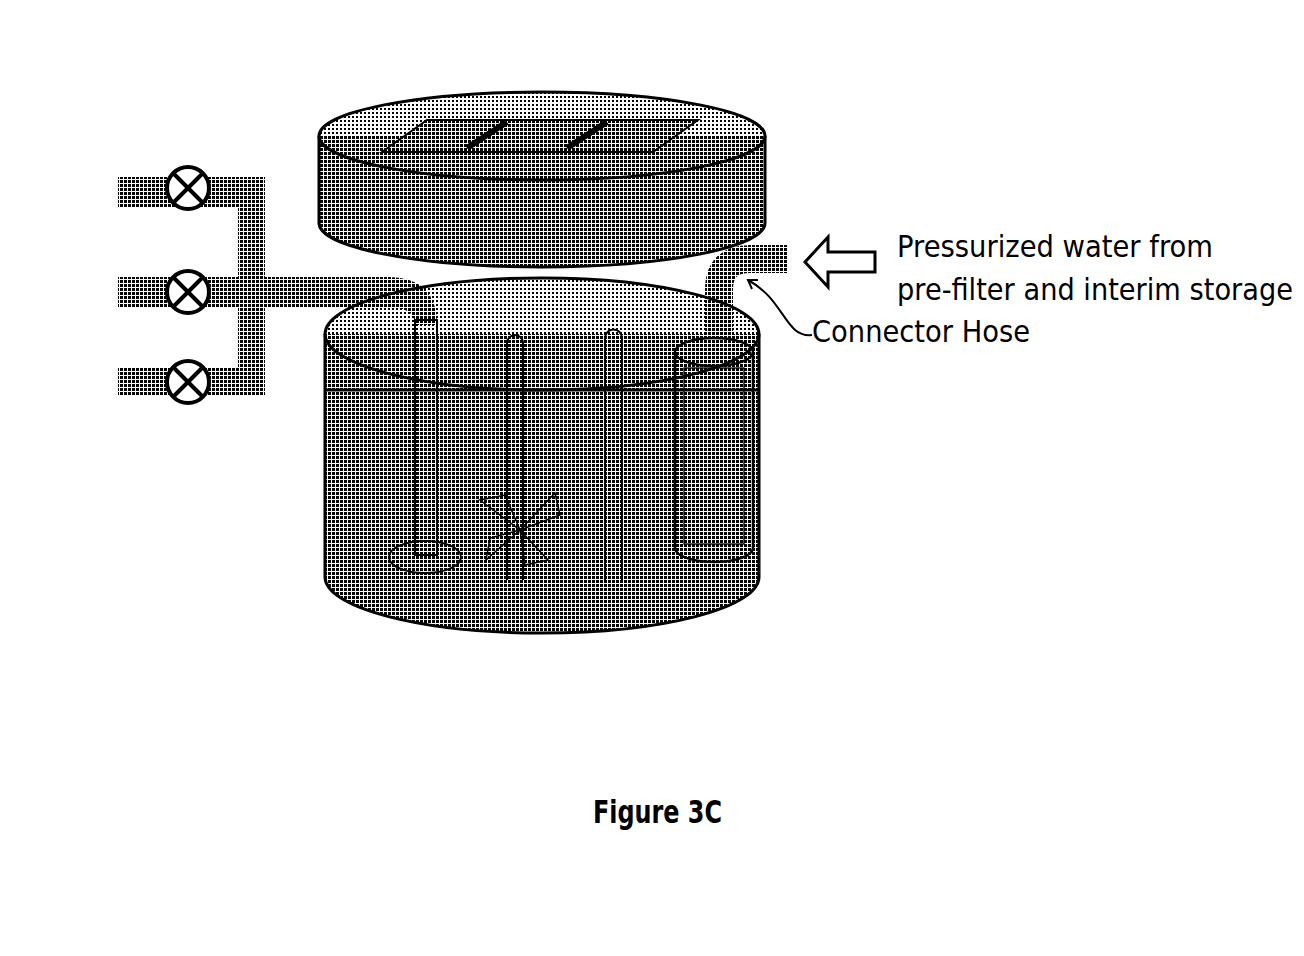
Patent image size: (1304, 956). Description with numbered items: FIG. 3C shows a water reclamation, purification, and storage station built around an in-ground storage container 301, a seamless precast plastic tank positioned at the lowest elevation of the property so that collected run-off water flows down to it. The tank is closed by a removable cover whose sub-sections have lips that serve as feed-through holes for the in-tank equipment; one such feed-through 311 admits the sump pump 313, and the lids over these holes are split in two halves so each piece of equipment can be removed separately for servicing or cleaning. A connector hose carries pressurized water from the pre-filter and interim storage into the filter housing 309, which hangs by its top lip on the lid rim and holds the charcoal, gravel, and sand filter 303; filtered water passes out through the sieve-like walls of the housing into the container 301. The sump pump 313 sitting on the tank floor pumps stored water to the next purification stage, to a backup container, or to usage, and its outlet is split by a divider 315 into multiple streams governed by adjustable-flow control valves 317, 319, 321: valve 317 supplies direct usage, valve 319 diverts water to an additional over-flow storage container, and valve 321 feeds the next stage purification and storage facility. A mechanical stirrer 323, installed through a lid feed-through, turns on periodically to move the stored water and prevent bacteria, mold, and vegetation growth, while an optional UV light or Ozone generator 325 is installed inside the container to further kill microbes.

The storage container 301 is at (542, 486).
The filter 303 is at (729, 402).
The filter housing 309 is at (910, 450).
The feed-through 311 is at (589, 142).
The sump pump 313 is at (465, 575).
The divider 315 is at (215, 323).
The adjustable-flow control valve 317 is at (191, 362).
The adjustable-flow control valve 319 is at (277, 391).
The adjustable-flow control valve 321 is at (191, 163).
The mechanical stirrer 323 is at (533, 523).
The UV light or Ozone generator 325 is at (625, 448).